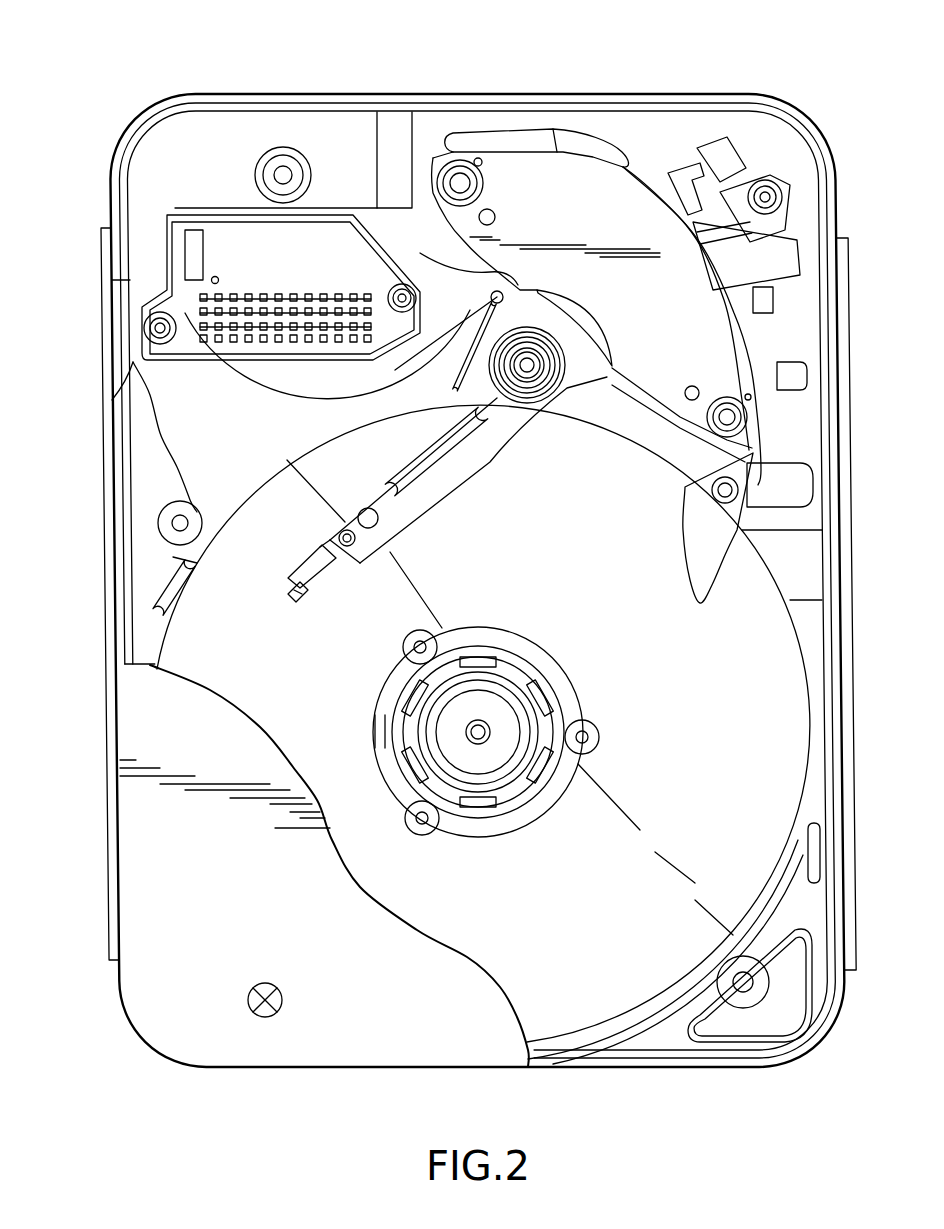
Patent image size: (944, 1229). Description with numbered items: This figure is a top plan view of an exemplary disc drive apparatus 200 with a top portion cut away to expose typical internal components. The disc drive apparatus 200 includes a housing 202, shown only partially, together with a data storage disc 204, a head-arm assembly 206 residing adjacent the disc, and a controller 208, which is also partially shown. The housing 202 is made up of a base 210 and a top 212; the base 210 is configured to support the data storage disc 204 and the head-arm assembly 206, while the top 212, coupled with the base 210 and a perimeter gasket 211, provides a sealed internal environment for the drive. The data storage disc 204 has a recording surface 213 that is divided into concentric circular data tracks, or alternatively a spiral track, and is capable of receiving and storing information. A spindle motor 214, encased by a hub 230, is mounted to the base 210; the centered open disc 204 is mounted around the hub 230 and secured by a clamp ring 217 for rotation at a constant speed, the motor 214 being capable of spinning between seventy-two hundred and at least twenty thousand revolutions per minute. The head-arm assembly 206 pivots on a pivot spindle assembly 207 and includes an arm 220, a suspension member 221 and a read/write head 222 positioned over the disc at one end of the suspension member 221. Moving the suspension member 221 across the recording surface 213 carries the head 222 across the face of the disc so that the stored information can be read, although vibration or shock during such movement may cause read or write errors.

The disc drive apparatus 200 is at (451, 560).
The housing 202 is at (112, 886).
The data storage disc 204 is at (812, 712).
The head-arm assembly 206 is at (645, 168).
The pivot spindle assembly 207 is at (527, 372).
The controller 208 is at (227, 313).
The base 210 is at (156, 480).
The perimeter gasket 211 is at (748, 97).
The top 212 is at (337, 1030).
The recording surface 213 is at (720, 819).
The spindle motor 214 is at (512, 736).
The clamp ring 217 is at (550, 795).
The arm 220 is at (390, 463).
The suspension member 221 is at (393, 530).
The read/write head 222 is at (296, 600).
The hub 230 is at (522, 665).